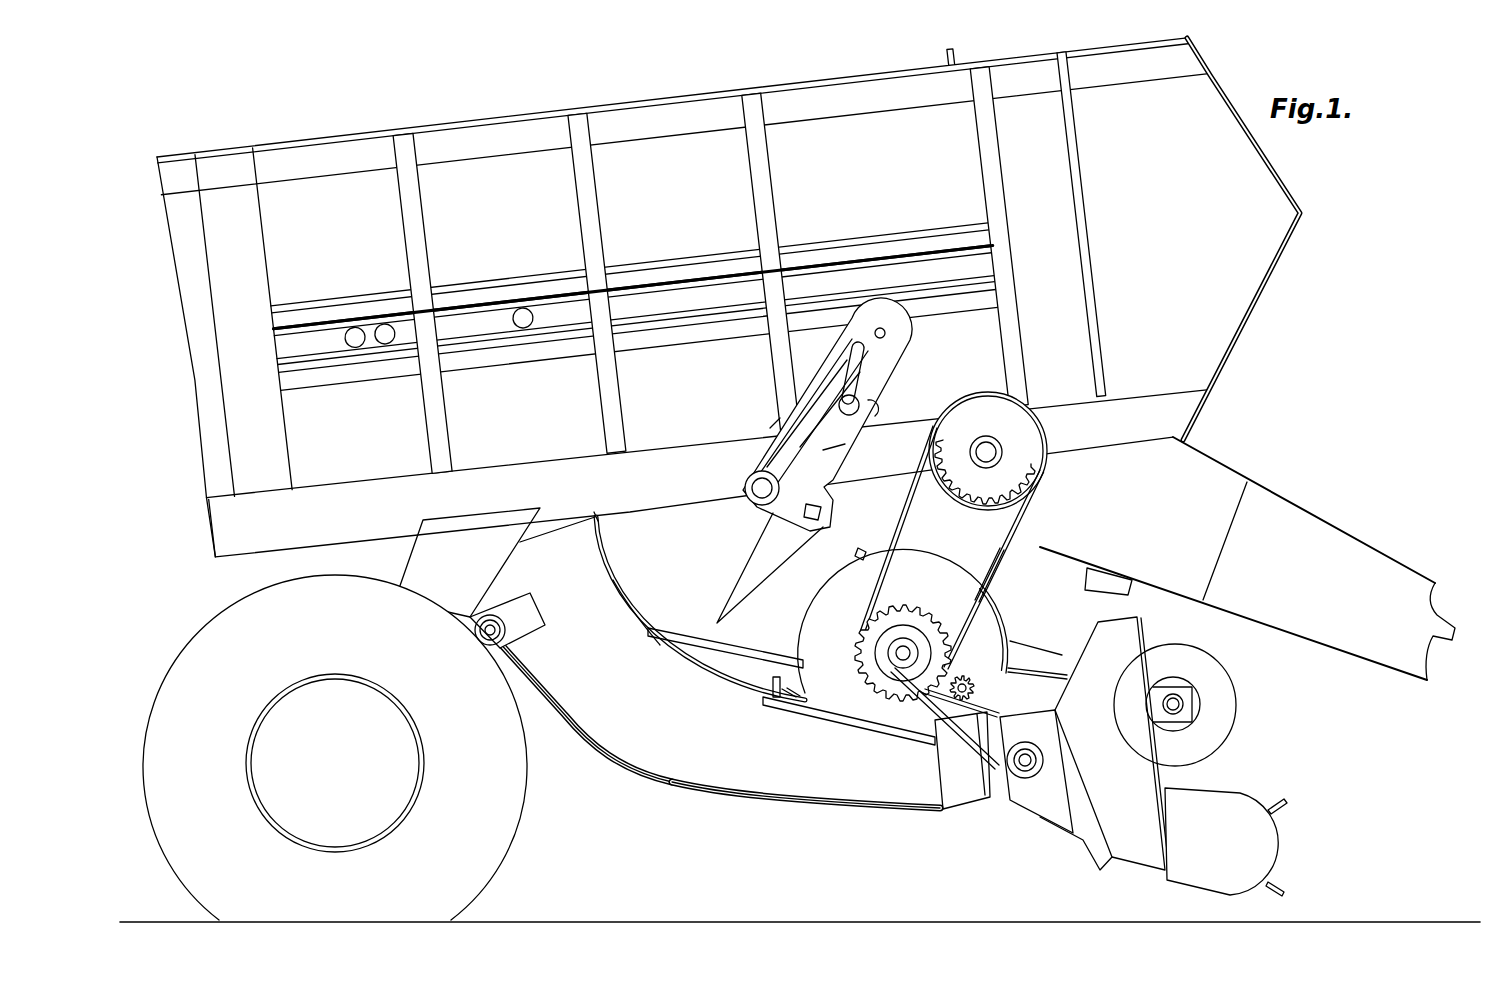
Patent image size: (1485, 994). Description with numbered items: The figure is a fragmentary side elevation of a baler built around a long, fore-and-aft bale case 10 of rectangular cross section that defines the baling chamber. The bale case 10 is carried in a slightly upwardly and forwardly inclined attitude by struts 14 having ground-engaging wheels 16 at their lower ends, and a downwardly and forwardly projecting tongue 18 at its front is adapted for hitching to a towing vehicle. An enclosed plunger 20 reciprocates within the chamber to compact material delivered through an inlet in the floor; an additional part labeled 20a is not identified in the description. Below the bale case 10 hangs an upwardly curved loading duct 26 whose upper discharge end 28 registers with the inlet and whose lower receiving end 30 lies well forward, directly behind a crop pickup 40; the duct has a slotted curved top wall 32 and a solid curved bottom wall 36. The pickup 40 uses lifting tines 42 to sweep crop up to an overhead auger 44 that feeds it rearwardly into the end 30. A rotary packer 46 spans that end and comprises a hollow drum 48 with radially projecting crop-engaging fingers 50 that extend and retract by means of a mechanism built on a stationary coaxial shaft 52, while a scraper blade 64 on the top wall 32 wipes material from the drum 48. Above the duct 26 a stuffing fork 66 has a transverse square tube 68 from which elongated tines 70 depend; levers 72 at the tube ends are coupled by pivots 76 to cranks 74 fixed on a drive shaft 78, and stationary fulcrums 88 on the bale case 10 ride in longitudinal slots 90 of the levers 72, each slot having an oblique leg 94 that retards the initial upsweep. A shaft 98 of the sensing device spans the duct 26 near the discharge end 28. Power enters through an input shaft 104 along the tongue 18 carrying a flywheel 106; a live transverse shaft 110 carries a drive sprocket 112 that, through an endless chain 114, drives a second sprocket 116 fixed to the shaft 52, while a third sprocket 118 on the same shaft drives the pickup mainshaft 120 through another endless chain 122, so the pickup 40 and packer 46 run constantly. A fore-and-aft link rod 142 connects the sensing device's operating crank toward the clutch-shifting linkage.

The bale case 10 is at (628, 88).
The struts 14 is at (416, 541).
The ground-engaging wheels 16 is at (212, 634).
The tongue 18 is at (1330, 546).
The plunger 20 is at (336, 345).
The conveyor chain strand 20a is at (304, 338).
The loading duct 26 is at (644, 774).
The upper discharge end 28 is at (600, 522).
The lower receiving end 30 is at (1000, 801).
The curved top wall 32 is at (665, 655).
The curved bottom wall 36 is at (746, 790).
The crop pickup 40 is at (1268, 790).
The lifting tines 42 is at (1290, 889).
The overhead auger 44 is at (1233, 705).
The rotary packer 46 is at (1016, 620).
The hollow drum 48 is at (1011, 642).
The crop-engaging fingers 50 is at (862, 550).
The stationary shaft 52 is at (897, 653).
The scraper blade 64 is at (778, 702).
The stuffing fork 66 is at (770, 427).
The transverse square tube 68 is at (827, 524).
The tines 70 is at (753, 558).
The levers 72 is at (793, 417).
The crank 74 is at (862, 364).
The pivot 76 is at (886, 333).
The drive shaft 78 is at (878, 400).
The stationary fulcrums 88 is at (760, 481).
The longitudinally extending slots 90 is at (824, 450).
The obliquely extending leg 94 is at (843, 379).
The shaft 98 is at (478, 636).
The power input shaft 104 is at (1448, 606).
The flywheel 106 is at (1132, 590).
The live transverse shaft 110 is at (986, 460).
The drive sprocket 112 is at (1012, 418).
The endless chain 114 is at (1028, 524).
The second sprocket 116 is at (872, 634).
The third sprocket 118 is at (912, 640).
The mainshaft 120 is at (1031, 769).
The endless chain 122 is at (960, 740).
The link rod 142 is at (700, 630).